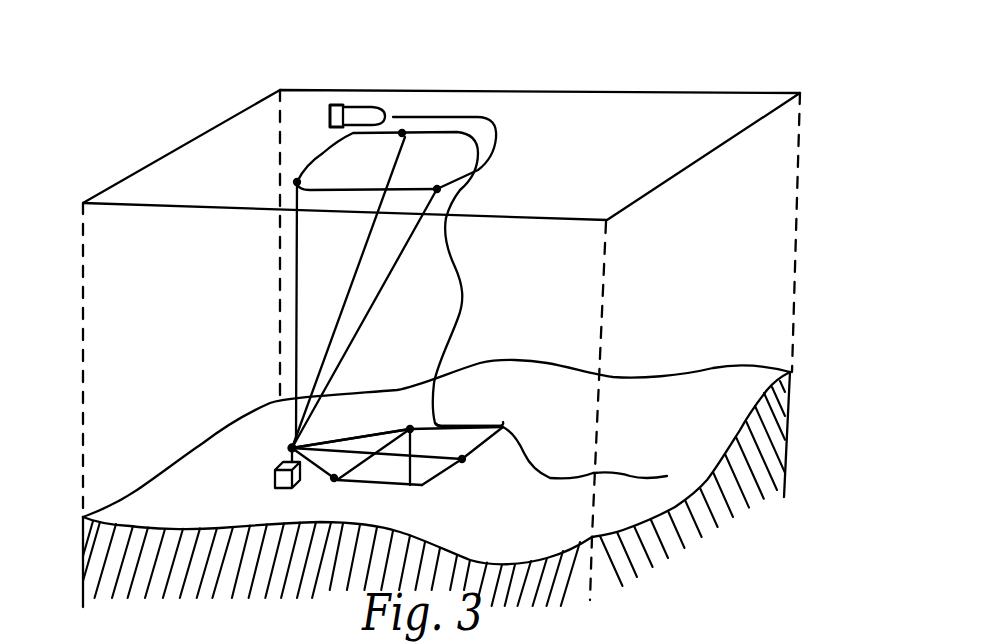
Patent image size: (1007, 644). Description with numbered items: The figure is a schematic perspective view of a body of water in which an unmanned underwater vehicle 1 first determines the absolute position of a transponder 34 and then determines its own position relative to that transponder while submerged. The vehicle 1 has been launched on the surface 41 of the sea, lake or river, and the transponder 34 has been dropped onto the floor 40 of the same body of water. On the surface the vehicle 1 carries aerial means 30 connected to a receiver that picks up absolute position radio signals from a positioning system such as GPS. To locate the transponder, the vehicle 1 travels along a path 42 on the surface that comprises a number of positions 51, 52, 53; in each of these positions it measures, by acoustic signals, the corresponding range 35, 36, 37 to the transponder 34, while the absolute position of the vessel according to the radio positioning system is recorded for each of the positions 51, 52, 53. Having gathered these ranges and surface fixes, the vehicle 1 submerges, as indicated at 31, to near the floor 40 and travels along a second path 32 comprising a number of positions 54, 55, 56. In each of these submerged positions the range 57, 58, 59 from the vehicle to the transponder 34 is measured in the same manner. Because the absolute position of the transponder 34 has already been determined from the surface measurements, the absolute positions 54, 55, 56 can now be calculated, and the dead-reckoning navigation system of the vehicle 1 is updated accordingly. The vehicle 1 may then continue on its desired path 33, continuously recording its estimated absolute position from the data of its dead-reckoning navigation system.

The unmanned underwater vehicle 1 is at (375, 106).
The aerial means 30 is at (353, 104).
The submerging 31 is at (463, 288).
The submerged path 32 is at (475, 411).
The desired path 33 is at (623, 473).
The transponder 34 is at (263, 471).
The range 35 is at (372, 324).
The range 36 is at (296, 318).
The range 37 is at (366, 236).
The floor 40 is at (142, 513).
The surface 41 is at (630, 110).
The surface path 42 is at (442, 112).
The position 51 is at (437, 189).
The position 52 is at (297, 183).
The position 53 is at (403, 138).
The position 54 is at (468, 462).
The position 55 is at (336, 490).
The position 56 is at (410, 428).
The range 57 is at (410, 485).
The range 58 is at (290, 495).
The range 59 is at (357, 430).